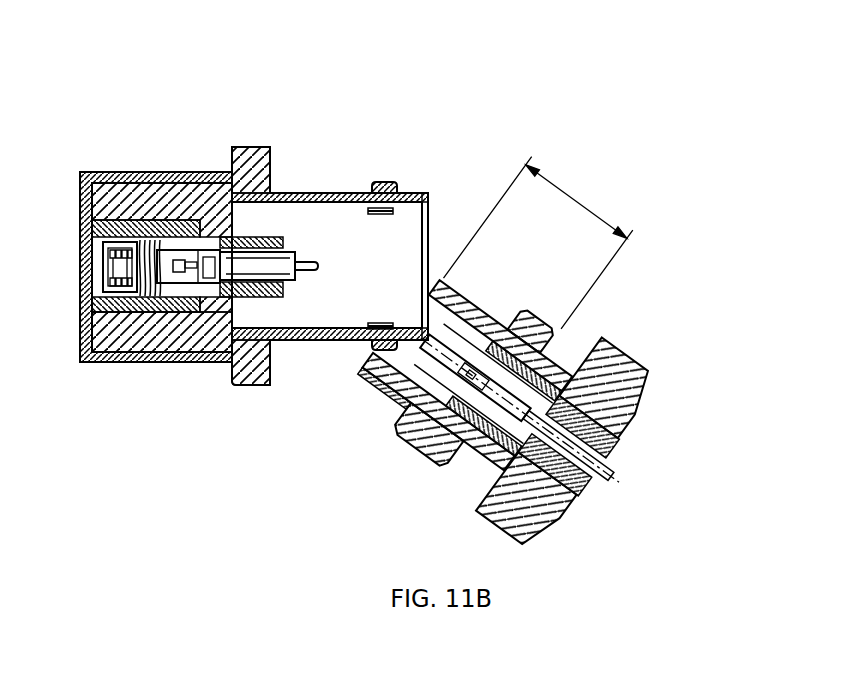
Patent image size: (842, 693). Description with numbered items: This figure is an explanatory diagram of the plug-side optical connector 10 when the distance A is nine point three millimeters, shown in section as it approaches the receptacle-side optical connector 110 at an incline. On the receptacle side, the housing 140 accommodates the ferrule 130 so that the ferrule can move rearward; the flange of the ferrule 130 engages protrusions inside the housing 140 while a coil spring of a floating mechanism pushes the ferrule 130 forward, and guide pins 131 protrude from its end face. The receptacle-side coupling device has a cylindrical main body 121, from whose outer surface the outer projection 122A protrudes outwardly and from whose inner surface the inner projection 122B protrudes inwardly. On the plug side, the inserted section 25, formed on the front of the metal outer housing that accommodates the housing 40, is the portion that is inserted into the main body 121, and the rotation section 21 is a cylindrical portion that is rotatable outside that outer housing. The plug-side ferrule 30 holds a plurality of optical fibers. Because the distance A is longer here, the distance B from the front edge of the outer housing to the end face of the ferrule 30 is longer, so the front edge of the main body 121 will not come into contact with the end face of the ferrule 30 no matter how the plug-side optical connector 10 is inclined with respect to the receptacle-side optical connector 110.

The plug-side optical connector 10 is at (665, 322).
The rotation section 21 is at (538, 302).
The inserted section 25 is at (470, 297).
The ferrule 30 is at (420, 410).
The housing 40 is at (430, 445).
The receptacle-side optical connector 110 is at (243, 106).
The main body 121 is at (325, 340).
The outer projection 122A is at (383, 183).
The inner projection 122B is at (383, 215).
The ferrule 130 is at (273, 262).
The guide pins 131 is at (300, 263).
The housing 140 is at (176, 200).